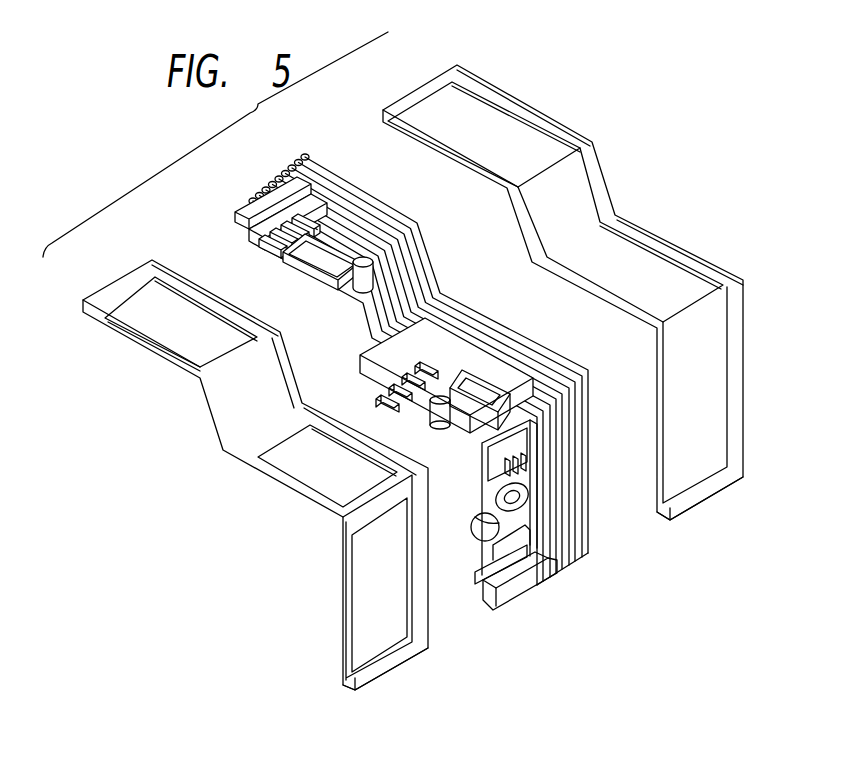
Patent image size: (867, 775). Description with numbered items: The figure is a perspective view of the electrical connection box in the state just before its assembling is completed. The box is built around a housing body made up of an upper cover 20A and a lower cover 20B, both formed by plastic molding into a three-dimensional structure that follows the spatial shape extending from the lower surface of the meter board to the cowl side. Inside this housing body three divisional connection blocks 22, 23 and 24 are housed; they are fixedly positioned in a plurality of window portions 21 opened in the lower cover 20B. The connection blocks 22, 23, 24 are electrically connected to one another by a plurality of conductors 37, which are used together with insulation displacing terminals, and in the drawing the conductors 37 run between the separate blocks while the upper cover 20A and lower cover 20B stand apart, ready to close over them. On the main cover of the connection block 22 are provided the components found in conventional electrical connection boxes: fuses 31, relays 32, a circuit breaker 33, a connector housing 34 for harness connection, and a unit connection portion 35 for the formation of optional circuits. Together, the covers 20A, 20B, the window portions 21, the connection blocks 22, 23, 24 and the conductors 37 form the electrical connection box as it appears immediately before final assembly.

The upper cover 20A is at (653, 238).
The lower cover 20B is at (207, 410).
The window portions 21 is at (305, 470).
The connection block 22 is at (520, 580).
The connection block 23 is at (383, 378).
The connection block 24 is at (278, 213).
The fuses 31 is at (490, 466).
The relays 32 is at (483, 505).
The circuit breaker 33 is at (478, 520).
The connector housing 34 is at (487, 577).
The unit connection portion 35 is at (522, 442).
The conductors 37 is at (588, 537).